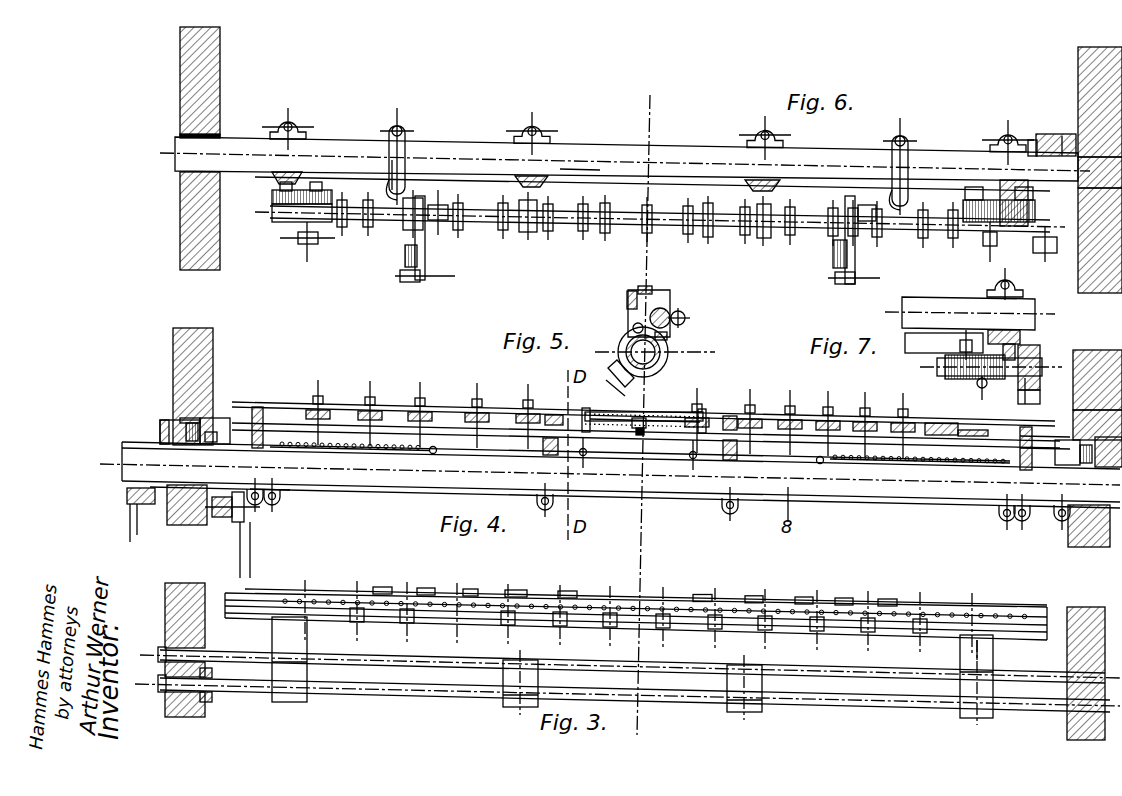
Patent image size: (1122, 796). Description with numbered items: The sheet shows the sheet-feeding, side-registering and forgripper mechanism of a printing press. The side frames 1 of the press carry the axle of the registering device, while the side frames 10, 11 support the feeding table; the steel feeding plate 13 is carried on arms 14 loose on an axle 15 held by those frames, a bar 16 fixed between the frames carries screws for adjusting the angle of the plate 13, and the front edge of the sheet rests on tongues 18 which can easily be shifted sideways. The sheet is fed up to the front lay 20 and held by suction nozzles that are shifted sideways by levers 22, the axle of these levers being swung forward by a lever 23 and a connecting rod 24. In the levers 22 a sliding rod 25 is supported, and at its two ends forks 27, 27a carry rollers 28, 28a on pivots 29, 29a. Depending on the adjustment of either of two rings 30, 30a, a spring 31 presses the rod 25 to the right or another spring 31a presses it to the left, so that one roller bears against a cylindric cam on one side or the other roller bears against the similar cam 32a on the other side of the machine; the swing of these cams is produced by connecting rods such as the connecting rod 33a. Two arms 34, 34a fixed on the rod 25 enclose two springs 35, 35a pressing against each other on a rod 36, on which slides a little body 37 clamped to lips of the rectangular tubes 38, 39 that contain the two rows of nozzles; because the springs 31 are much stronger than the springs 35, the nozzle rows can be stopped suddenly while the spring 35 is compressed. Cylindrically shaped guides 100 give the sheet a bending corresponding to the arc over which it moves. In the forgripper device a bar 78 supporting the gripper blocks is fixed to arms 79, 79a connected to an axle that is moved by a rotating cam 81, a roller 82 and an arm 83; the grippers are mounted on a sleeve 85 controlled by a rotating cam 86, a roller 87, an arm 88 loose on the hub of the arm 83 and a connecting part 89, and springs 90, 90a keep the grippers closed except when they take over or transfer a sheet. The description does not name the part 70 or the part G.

In FIG. 6, the side frame 1 is at (190, 88).
In FIG. 4, the side frame 1 is at (185, 366).
In FIG. 3, the side frame 10 is at (178, 630).
In FIG. 3, the side frame 11 is at (1085, 652).
In FIG. 3, the steel feeding plate 13 is at (985, 660).
In FIG. 3, the arms 14 is at (290, 696).
In FIG. 3, the axle 15 is at (232, 685).
In FIG. 3, the bar 16 is at (252, 653).
In FIG. 3, the tongues 18 is at (410, 622).
In FIG. 3, the front lay 20 is at (388, 590).
In FIG. 4, the levers 22 is at (278, 492).
In FIG. 4, the lever 23 is at (222, 518).
In FIG. 4, the connecting rod 24 is at (250, 532).
In FIG. 4, the sliding rod 25 is at (268, 450).
In FIG. 4, the fork 27 is at (1072, 452).
In FIG. 4, the fork 27a is at (232, 430).
In FIG. 4, the roller 28 is at (1108, 445).
In FIG. 4, the roller 28a is at (190, 418).
In FIG. 4, the pivot 29 is at (1087, 446).
In FIG. 4, the pivot 29a is at (194, 422).
In FIG. 4, the ring 30 is at (432, 455).
In FIG. 4, the ring 30a is at (821, 464).
In FIG. 4, the spring 31 is at (395, 450).
In FIG. 4, the spring 31a is at (905, 463).
In FIG. 4, the cylindric cam 32a is at (170, 428).
In FIG. 4, the connecting rod 33a is at (140, 520).
In FIG. 5, the arm 34 is at (660, 300).
In FIG. 4, the arm 34 is at (692, 460).
In FIG. 4, the arm 34a is at (588, 456).
In FIG. 4, the spring 35 is at (635, 416).
In FIG. 4, the spring 35a is at (612, 416).
In FIG. 5, the rod 36 is at (660, 440).
In FIG. 5, the little body 37 is at (643, 290).
In FIG. 4, the little body 37 is at (641, 418).
In FIG. 3, the rectangular tube 38 is at (990, 616).
In FIG. 3, the rectangular tube 39 is at (1030, 632).
In FIG. 3, the channel rail 70 is at (318, 598).
In FIG. 6, the bar 78 is at (665, 192).
In FIG. 7, the bar 78 is at (912, 335).
In FIG. 6, the arm 79 is at (972, 226).
In FIG. 7, the arm 79 is at (958, 348).
In FIG. 6, the arm 79a is at (320, 232).
In FIG. 6, the rotating cam 81 is at (1030, 222).
In FIG. 6, the roller 82 is at (1050, 248).
In FIG. 6, the arm 83 is at (1000, 236).
In FIG. 7, the arm 83 is at (1038, 360).
In FIG. 6, the sleeve 85 is at (640, 230).
In FIG. 6, the rotating cam 86 is at (1042, 136).
In FIG. 7, the roller 87 is at (1038, 394).
In FIG. 7, the arm 88 is at (1012, 388).
In FIG. 7, the connecting part 89 is at (985, 345).
In FIG. 6, the spring 90 is at (858, 262).
In FIG. 6, the spring 90a is at (416, 258).
In FIG. 4, the guides 100 is at (370, 410).
In FIG. 6, the shaft G is at (582, 162).